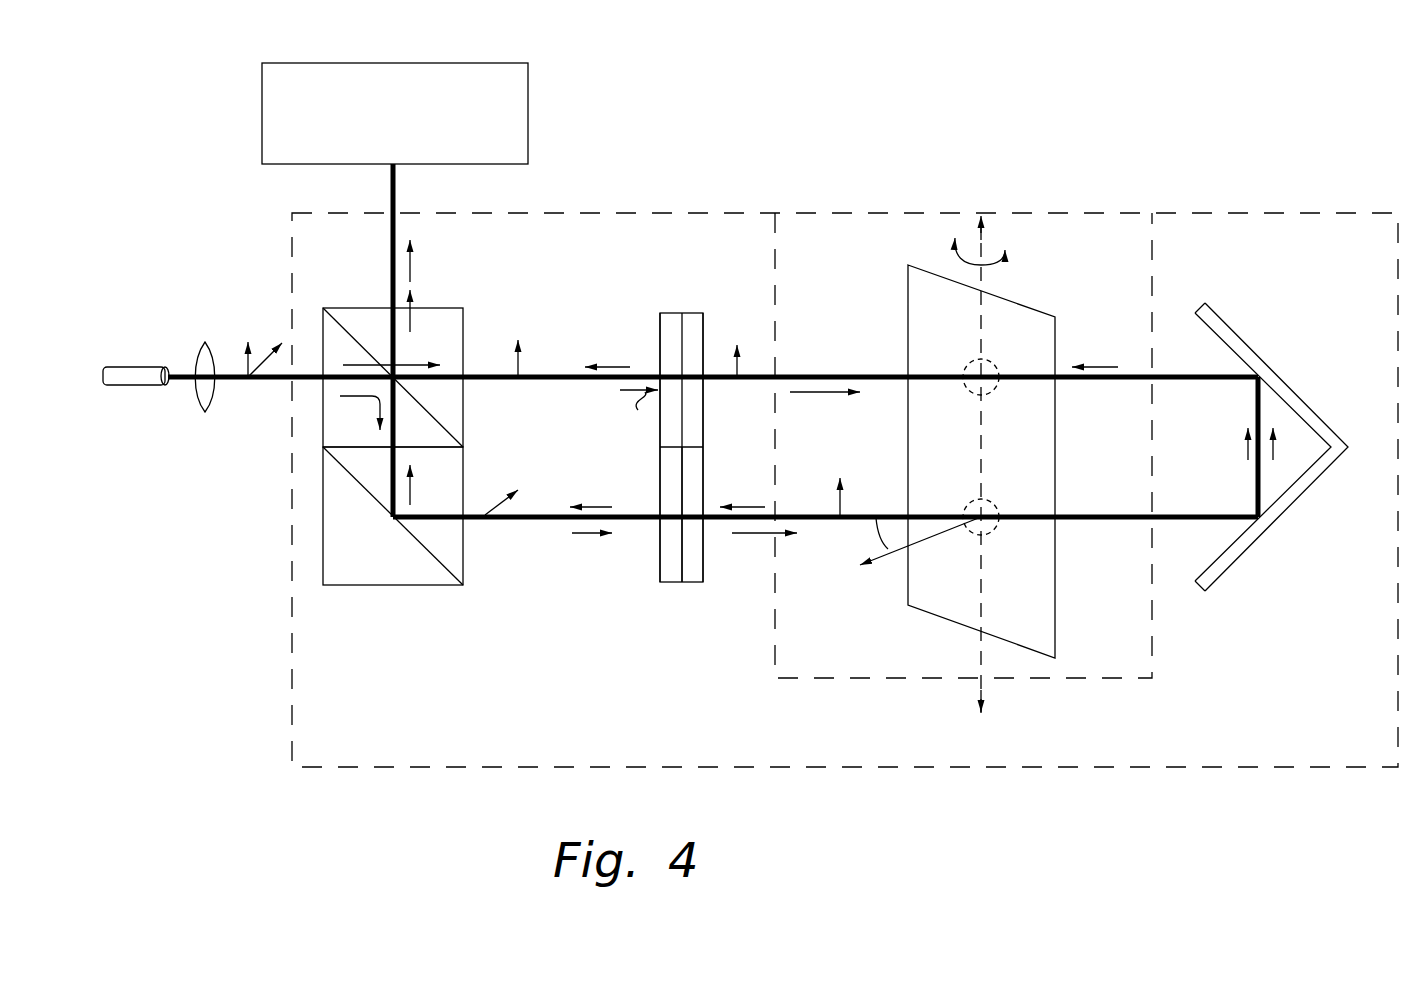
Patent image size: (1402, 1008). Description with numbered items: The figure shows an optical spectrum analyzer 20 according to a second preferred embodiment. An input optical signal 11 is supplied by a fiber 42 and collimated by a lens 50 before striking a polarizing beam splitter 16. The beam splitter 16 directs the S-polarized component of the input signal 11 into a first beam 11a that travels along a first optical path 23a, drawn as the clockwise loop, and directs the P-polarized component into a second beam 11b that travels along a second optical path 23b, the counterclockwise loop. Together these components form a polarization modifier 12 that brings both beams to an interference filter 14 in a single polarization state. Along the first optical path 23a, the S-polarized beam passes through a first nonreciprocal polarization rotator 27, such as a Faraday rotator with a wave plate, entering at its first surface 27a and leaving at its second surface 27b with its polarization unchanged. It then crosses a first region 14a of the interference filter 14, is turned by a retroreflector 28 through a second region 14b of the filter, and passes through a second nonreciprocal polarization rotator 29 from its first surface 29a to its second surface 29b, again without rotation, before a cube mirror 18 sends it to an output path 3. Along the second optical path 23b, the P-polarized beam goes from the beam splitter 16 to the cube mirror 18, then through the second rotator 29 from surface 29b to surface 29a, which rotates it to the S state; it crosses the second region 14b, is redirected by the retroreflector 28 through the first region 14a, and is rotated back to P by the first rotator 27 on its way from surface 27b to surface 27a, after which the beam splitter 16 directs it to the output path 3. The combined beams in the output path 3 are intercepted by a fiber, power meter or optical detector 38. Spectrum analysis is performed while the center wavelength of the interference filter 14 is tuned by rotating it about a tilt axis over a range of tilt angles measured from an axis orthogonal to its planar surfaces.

The output path 3 is at (393, 192).
The input optical signal 11 is at (233, 382).
The first beam 11a is at (558, 375).
The second beam 11b is at (542, 520).
The polarization modifier 12 is at (1305, 213).
The interference filter 14 is at (908, 290).
The first region of the interference filter 14a is at (990, 368).
The second region of the interference filter 14b is at (998, 527).
The polarizing beam splitter 16 is at (350, 328).
The cube mirror 18 is at (357, 478).
The optical spectrum analyzer 20 is at (1281, 799).
The first optical path 23a is at (795, 374).
The second optical path 23b is at (829, 423).
The first nonreciprocal polarization rotator 27 is at (682, 313).
The first surface of the first nonreciprocal rotator 27a is at (660, 328).
The second surface of the first nonreciprocal rotator 27b is at (703, 320).
The retroreflector 28 is at (1278, 387).
The second nonreciprocal polarization rotator 29 is at (682, 582).
The first surface of the second nonreciprocal rotator 29a is at (703, 567).
The second surface of the second nonreciprocal rotator 29b is at (660, 568).
The fiber, power meter or optical detector 38 is at (528, 96).
The fiber 42 is at (143, 372).
The lens 50 is at (197, 407).